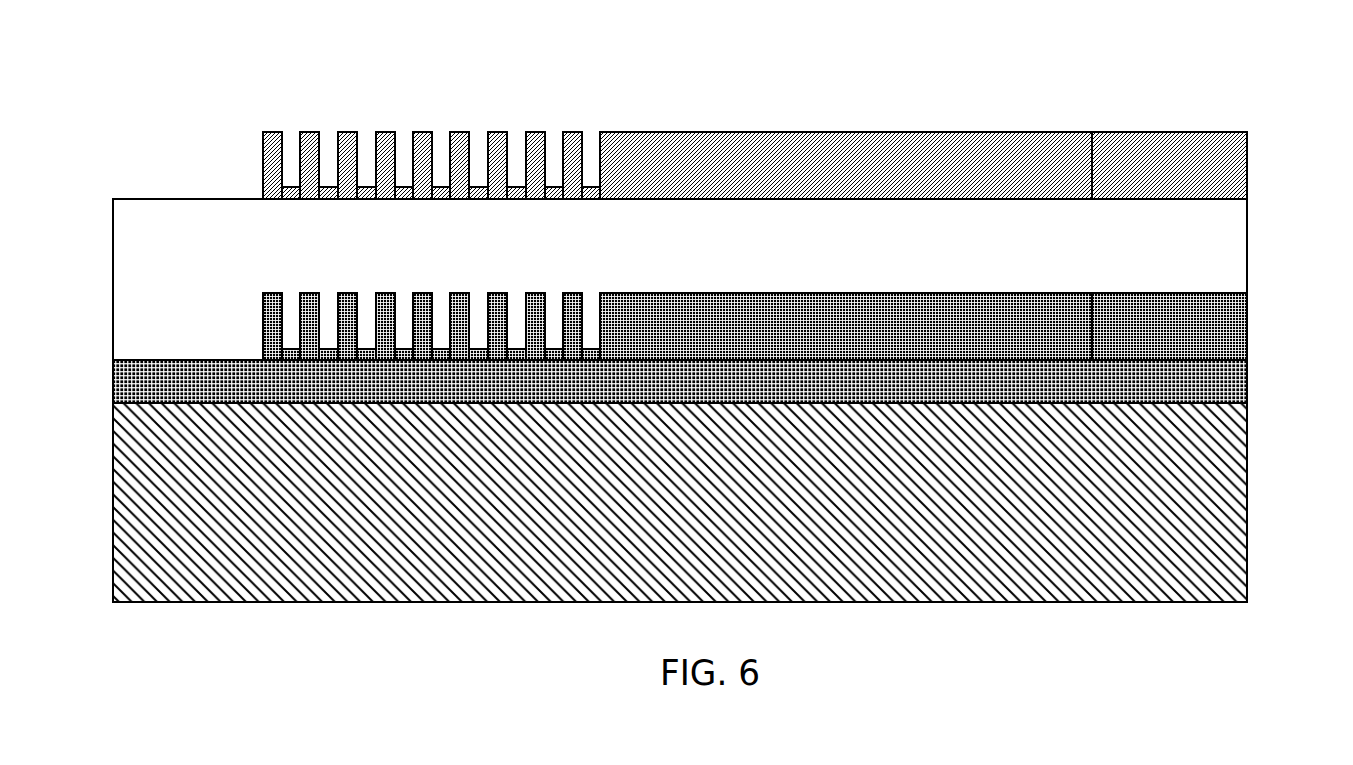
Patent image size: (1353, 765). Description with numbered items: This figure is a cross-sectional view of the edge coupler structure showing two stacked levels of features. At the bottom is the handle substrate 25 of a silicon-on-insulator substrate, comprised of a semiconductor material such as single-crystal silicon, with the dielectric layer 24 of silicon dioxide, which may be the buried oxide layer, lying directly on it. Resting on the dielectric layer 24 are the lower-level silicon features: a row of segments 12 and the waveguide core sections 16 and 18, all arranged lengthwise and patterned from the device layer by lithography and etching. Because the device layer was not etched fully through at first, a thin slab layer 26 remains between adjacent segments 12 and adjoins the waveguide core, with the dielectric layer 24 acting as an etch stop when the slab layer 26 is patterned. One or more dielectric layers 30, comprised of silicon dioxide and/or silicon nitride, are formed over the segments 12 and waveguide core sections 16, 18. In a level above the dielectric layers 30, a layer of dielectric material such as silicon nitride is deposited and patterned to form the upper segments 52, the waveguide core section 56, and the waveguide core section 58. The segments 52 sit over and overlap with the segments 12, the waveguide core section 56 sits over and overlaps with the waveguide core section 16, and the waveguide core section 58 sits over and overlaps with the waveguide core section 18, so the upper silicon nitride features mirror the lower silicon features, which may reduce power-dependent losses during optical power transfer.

The segments 12 is at (348, 310).
The waveguide core section 16 is at (835, 338).
The waveguide core section 18 is at (1162, 338).
The dielectric layer 24 is at (1175, 383).
The handle substrate 25 is at (1177, 484).
The slab layer 26 is at (553, 349).
The dielectric layers 30 is at (1187, 255).
The segments 52 is at (348, 152).
The waveguide core section 56 is at (553, 186).
The waveguide core section 58 is at (1162, 177).